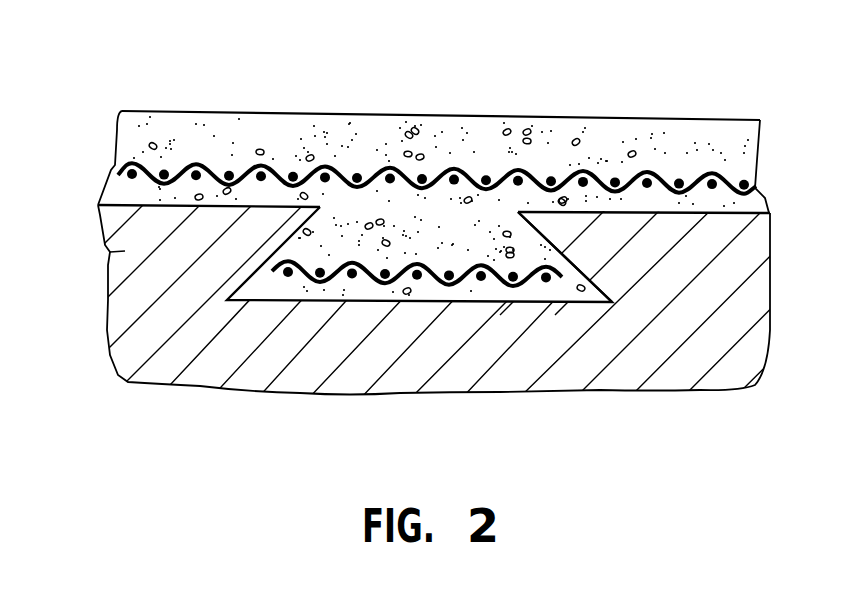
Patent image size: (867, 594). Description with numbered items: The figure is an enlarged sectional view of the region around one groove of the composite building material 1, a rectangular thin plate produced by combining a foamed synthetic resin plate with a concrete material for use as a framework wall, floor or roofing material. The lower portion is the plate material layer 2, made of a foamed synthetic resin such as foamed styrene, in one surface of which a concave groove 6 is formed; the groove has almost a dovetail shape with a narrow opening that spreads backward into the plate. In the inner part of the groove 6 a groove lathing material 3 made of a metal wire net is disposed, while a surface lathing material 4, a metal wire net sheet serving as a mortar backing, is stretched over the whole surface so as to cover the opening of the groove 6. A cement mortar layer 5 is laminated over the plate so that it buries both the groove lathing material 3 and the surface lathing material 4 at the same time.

The composite building material 1 is at (135, 88).
The plate material layer 2 is at (108, 255).
The groove lathing material 3 is at (447, 268).
The surface lathing material 4 is at (272, 181).
The cement mortar layer 5 is at (117, 130).
The concave groove 6 is at (538, 298).